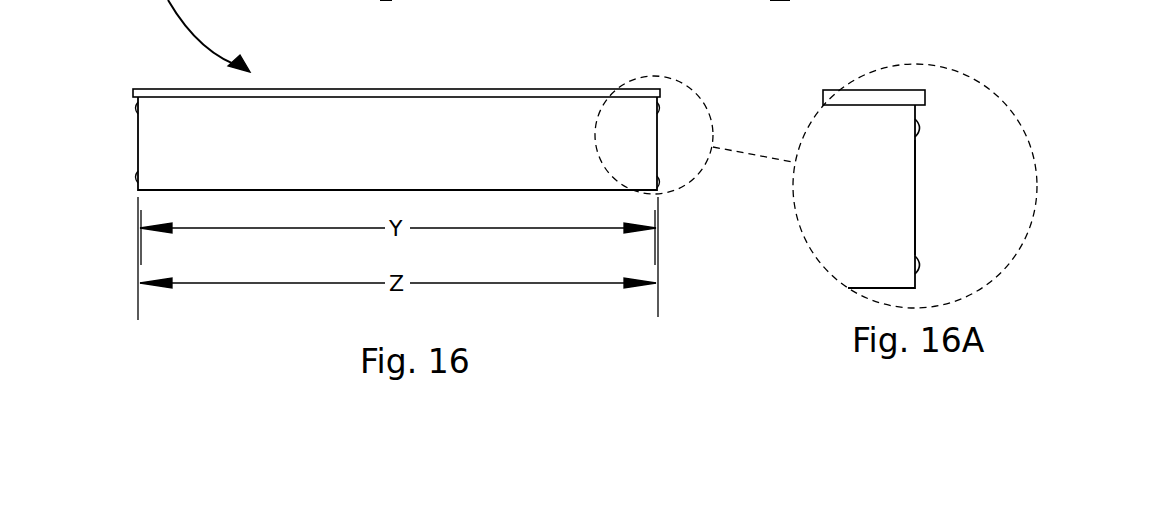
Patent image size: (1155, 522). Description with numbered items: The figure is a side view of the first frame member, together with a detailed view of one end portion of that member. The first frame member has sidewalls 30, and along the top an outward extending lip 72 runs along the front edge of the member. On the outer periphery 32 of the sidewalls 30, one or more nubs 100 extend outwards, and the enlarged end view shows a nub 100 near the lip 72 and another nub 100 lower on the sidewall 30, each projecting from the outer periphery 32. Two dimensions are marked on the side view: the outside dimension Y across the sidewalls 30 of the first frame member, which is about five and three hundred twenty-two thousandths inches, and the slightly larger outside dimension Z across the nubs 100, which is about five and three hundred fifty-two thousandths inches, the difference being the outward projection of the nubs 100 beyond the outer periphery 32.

In FIG. 16, the sidewall 30 is at (389, 147).
In FIG. 16A, the sidewall 30 is at (855, 203).
In FIG. 16, the outward extending lip 72 is at (396, 93).
In FIG. 16A, the outward extending lip 72 is at (925, 96).
In FIG. 16, the nub 100 is at (658, 108).
In FIG. 16A, the nub 100 is at (920, 128).
In FIG. 16A, the outer periphery 32 is at (917, 170).